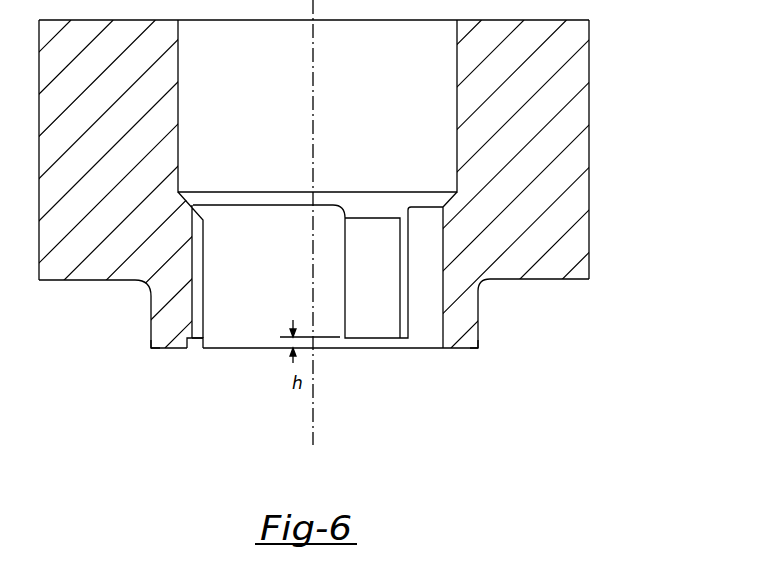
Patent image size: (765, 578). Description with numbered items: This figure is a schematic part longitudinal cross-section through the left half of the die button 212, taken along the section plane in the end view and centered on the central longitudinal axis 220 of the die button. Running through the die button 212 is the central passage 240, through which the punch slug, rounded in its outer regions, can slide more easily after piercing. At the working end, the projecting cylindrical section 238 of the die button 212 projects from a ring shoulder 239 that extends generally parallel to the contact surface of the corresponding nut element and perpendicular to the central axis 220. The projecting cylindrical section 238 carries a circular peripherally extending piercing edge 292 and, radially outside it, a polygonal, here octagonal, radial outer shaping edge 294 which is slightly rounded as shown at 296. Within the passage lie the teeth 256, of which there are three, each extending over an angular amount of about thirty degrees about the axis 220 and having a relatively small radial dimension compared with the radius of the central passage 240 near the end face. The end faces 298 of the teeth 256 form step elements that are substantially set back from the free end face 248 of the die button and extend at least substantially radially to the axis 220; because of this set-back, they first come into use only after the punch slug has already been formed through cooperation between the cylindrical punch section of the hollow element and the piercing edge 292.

The die button 212 is at (589, 98).
The central axis 220 is at (313, 61).
The central passage 240 is at (395, 126).
The teeth 256 is at (355, 258).
The projecting cylindrical section 238 is at (150, 315).
The ring shoulder 239 is at (548, 279).
The rounding of the shaping edge 296 is at (148, 348).
The free end face 248 is at (170, 348).
The end faces of the teeth 298 is at (203, 348).
The piercing edge 292 is at (440, 348).
The radial outer shaping edge 294 is at (478, 348).